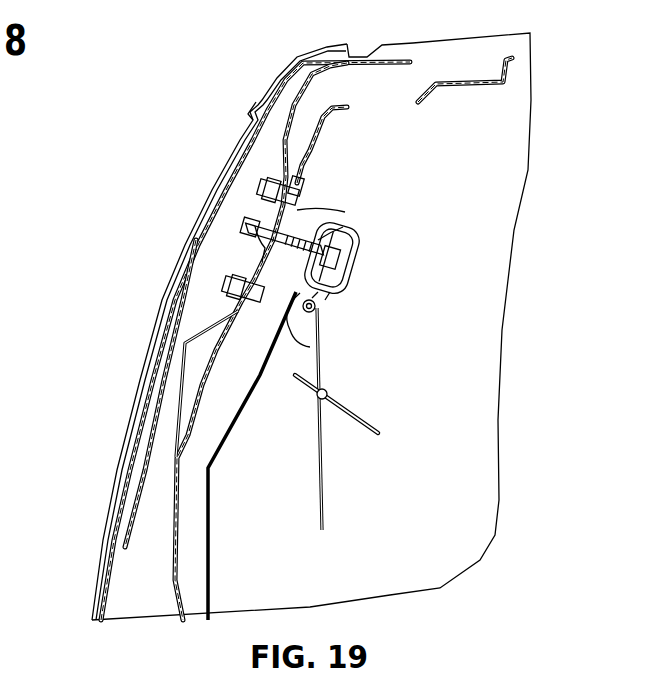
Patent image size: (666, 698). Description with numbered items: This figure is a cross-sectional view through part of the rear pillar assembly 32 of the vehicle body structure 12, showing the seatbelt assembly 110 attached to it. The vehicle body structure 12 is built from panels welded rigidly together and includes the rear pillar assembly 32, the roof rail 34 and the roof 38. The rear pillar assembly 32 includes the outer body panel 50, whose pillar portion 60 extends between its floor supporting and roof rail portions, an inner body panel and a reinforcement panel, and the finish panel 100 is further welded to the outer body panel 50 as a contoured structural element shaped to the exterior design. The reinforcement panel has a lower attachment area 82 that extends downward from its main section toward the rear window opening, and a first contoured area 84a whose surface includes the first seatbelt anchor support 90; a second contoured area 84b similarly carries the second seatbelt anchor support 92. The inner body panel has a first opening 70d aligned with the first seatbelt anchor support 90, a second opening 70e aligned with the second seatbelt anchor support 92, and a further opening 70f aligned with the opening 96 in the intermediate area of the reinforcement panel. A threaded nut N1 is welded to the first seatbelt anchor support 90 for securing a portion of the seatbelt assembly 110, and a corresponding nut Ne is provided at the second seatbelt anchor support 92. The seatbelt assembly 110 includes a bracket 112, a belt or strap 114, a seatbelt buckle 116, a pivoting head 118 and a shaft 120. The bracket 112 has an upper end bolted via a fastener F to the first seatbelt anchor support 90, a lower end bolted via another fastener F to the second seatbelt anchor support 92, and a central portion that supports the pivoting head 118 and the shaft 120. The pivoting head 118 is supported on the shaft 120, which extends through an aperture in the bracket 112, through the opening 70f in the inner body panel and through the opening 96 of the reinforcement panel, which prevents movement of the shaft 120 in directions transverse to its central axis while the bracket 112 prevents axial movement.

The vehicle body structure 12 is at (106, 193).
The rear pillar assembly 32 is at (146, 390).
The roof rail 34 is at (280, 80).
The roof 38 is at (485, 37).
The outer body panel 50 is at (188, 336).
The pillar portion 60 is at (210, 390).
The first opening 70d is at (297, 210).
The second opening 70e is at (310, 347).
The opening 70f is at (343, 227).
The lower attachment area 82 is at (145, 462).
The first contoured area 84a is at (300, 185).
The clamp ring 84b is at (314, 316).
The first seatbelt anchor support 90 is at (278, 185).
The second seatbelt anchor support 92 is at (225, 287).
The opening 96 is at (253, 226).
The finish panel 100 is at (172, 372).
The seatbelt assembly 110 is at (354, 266).
The bracket 112 is at (300, 212).
The belt or strap 114 is at (324, 497).
The seatbelt buckle 116 is at (330, 392).
The pivoting head 118 is at (340, 283).
The shaft 120 is at (245, 224).
The threaded nut N1 is at (277, 185).
The extended position Ne is at (230, 278).
The fastener F is at (304, 195).